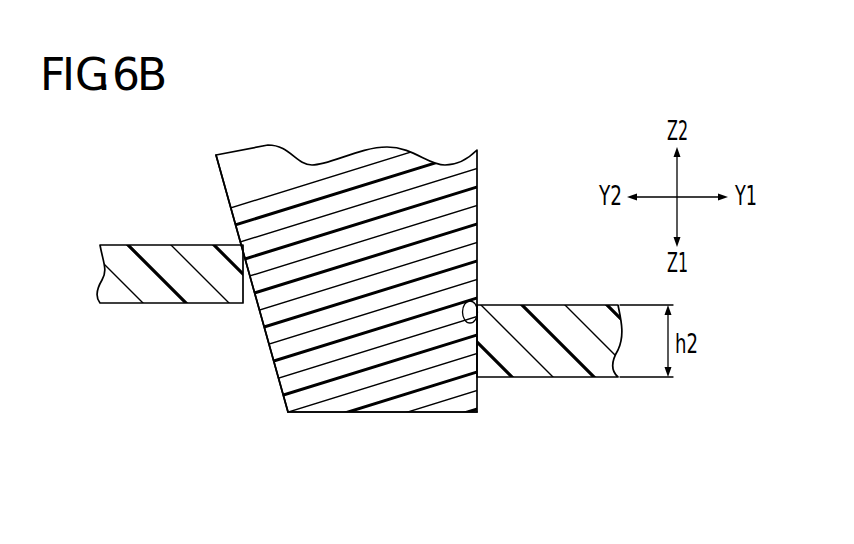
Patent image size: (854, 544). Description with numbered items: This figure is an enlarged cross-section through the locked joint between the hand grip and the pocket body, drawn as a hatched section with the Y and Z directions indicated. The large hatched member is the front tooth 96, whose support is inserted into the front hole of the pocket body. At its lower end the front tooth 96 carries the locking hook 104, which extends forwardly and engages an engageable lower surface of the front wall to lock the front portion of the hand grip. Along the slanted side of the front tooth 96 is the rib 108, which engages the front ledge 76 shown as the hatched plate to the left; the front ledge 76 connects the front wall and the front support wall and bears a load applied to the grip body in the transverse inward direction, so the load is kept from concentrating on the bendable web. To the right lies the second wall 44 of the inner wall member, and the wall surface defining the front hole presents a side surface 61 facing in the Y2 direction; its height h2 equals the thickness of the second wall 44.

The front tooth 96 is at (477, 150).
The rib 108 is at (277, 340).
The locking hook 104 is at (337, 395).
The side surface 61 is at (475, 300).
The front ledge 76 is at (195, 293).
The second wall 44 is at (530, 368).